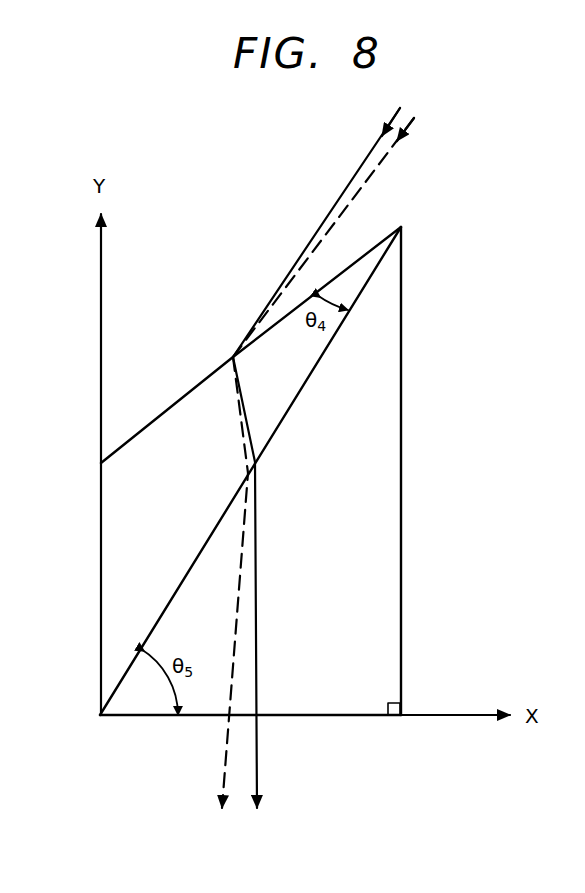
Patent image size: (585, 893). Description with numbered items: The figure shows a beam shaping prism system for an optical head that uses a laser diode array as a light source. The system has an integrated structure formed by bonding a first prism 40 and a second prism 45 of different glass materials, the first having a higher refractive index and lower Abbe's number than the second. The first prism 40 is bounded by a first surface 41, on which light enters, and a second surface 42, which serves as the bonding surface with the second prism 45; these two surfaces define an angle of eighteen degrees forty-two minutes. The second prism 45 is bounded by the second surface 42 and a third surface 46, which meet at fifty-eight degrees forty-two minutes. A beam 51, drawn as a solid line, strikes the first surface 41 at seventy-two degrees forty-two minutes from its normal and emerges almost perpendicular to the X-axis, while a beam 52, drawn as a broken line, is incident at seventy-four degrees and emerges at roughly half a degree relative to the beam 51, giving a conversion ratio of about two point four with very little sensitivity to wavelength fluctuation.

The first prism 40 is at (122, 538).
The first surface 41 is at (153, 418).
The second surface 42 is at (165, 598).
The second prism 45 is at (378, 608).
The third surface 46 is at (363, 715).
The beam 51 is at (390, 123).
The beam 52 is at (407, 133).